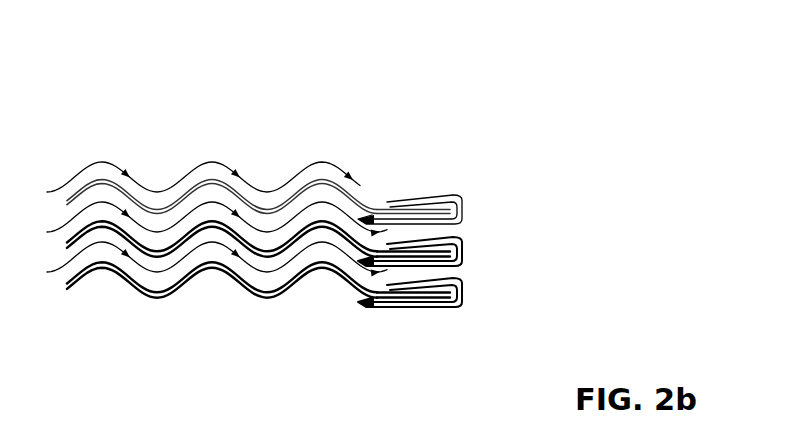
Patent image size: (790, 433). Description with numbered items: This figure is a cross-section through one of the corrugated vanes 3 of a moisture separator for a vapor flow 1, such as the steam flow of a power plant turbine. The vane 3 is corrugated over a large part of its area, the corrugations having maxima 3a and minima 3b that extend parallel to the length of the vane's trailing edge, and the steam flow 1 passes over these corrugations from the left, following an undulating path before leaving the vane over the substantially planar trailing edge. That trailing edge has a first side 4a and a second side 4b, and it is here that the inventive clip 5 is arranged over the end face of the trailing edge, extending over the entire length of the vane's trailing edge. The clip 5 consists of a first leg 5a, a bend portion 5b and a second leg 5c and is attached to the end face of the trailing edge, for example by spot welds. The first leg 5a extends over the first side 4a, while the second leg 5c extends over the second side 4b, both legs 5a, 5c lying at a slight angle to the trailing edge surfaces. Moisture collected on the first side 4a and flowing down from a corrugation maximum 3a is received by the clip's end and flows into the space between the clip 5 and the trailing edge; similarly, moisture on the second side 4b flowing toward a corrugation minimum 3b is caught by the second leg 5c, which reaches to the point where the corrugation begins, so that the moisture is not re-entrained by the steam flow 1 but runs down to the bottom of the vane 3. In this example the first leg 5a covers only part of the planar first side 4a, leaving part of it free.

The vapor flow 1 is at (293, 173).
The vane 3 is at (222, 238).
The corrugation maximum 3a is at (212, 270).
The corrugation minimum 3b is at (267, 300).
The first side 4a is at (378, 207).
The second side 4b is at (464, 158).
The clip 5 is at (464, 238).
The first leg 5a is at (412, 276).
The bend portion 5b is at (467, 293).
The second leg 5c is at (423, 310).